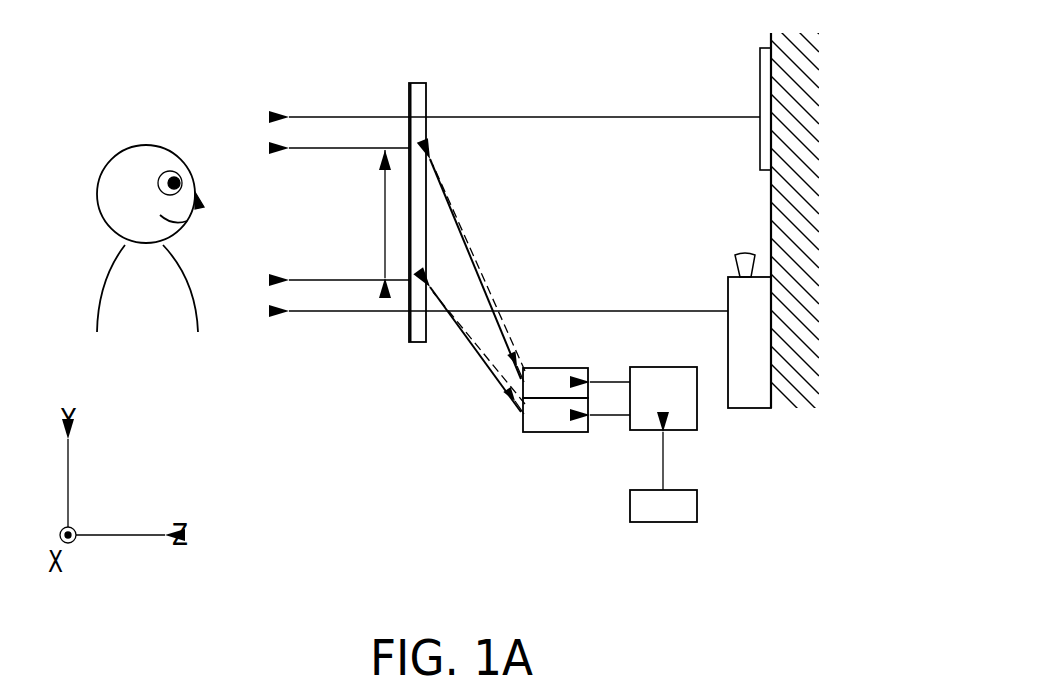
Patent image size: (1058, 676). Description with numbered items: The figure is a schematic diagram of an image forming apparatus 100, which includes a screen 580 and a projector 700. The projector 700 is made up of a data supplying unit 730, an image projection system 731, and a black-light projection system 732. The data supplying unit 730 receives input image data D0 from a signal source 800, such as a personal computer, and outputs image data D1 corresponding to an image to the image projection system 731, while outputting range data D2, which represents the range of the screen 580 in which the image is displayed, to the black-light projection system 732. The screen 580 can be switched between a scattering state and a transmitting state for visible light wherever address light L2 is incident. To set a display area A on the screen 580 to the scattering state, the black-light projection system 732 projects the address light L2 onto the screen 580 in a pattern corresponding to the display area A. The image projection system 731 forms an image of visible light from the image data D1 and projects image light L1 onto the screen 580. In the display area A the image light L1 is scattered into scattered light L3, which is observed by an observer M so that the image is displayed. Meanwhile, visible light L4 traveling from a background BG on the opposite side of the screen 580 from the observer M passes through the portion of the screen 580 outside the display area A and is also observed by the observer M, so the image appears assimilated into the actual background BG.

The image forming apparatus 100 is at (338, 450).
The screen 580 is at (415, 344).
The projector 700 is at (572, 490).
The data supplying unit 730 is at (660, 367).
The image projection system 731 is at (537, 433).
The black-light projection system 732 is at (547, 367).
The signal source 800 is at (697, 508).
The observer M is at (118, 305).
The background BG is at (684, 90).
The image light L1 is at (485, 368).
The address light L2 is at (478, 270).
The scattered light L3 is at (327, 152).
The visible light from background L4 is at (323, 113).
The display area A is at (374, 214).
The input image data D0 is at (665, 463).
The image data D1 is at (617, 418).
The range data D2 is at (617, 378).